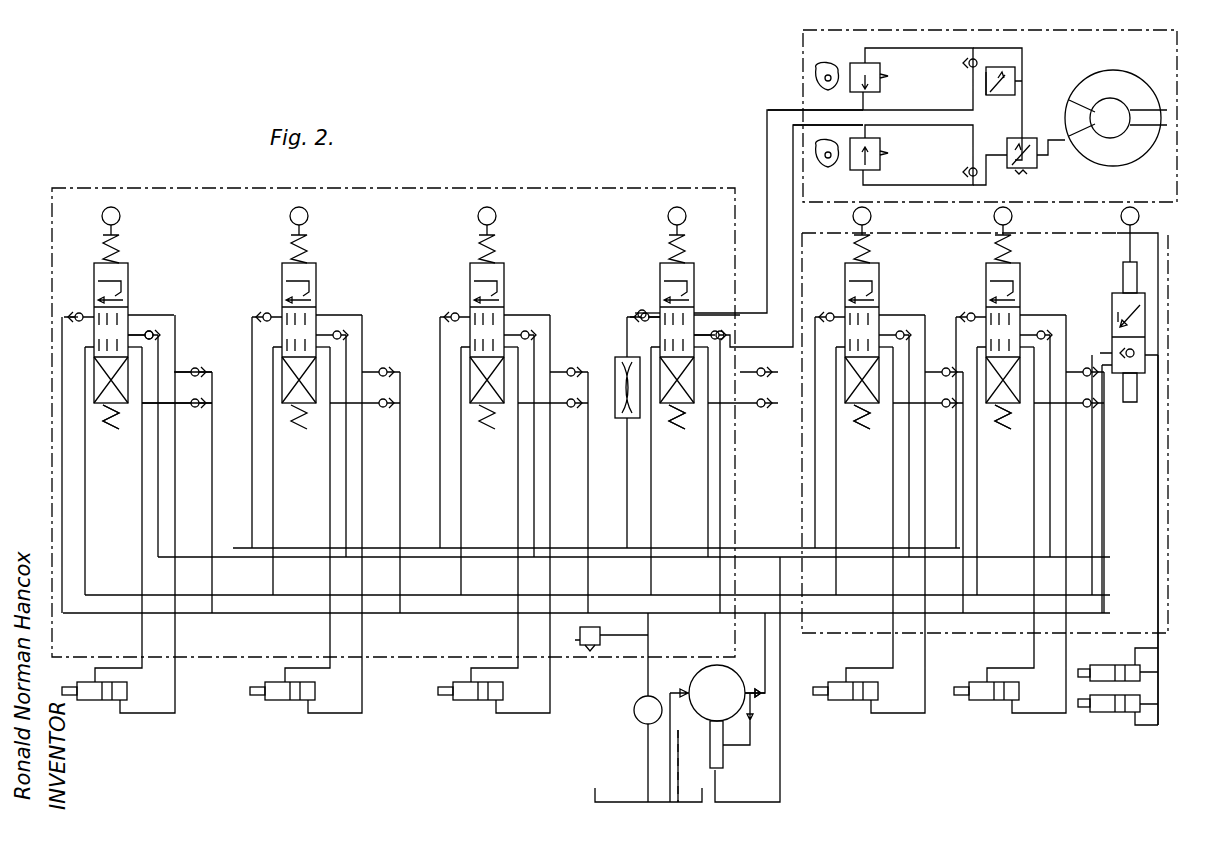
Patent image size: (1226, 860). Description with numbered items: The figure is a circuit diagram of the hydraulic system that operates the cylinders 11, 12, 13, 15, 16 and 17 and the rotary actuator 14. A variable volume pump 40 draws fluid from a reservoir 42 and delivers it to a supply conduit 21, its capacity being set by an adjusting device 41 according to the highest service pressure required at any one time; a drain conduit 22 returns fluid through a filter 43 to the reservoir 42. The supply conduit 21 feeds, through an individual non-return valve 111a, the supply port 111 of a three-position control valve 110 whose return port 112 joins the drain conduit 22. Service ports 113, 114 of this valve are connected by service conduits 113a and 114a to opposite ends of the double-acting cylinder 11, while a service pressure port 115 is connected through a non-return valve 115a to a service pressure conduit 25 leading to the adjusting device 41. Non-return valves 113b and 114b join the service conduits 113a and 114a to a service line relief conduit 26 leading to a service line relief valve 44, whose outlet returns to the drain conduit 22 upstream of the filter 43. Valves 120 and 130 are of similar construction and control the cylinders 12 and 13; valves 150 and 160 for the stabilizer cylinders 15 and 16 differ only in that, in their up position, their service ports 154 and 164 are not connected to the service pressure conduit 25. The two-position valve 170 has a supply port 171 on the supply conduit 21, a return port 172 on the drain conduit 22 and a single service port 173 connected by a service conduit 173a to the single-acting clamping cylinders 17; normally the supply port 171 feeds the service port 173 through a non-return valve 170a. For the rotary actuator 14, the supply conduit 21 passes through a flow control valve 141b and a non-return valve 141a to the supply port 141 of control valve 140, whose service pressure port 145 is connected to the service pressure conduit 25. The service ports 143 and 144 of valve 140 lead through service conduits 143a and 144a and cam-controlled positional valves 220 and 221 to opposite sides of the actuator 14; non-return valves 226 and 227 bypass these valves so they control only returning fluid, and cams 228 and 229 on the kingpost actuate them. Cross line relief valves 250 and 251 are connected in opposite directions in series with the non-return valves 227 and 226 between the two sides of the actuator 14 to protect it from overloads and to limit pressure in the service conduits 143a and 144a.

The double-acting cylinder 11 is at (92, 702).
The cylinder 12 is at (282, 702).
The cylinder 13 is at (472, 702).
The rotary actuator 14 is at (941, 134).
The cylinder 15 is at (840, 702).
The cylinder 16 is at (988, 702).
The single-acting cylinders 17 is at (1110, 665).
The supply conduit 21 is at (678, 615).
The drain conduit 22 is at (688, 610).
The service pressure conduit 25 is at (700, 557).
The service line relief conduit 26 is at (378, 548).
The variable volume pump 40 is at (726, 705).
The adjusting device 41 is at (720, 748).
The reservoir 42 is at (612, 798).
The filter 43 is at (634, 712).
The service line relief valve 44 is at (578, 648).
The three-position control valve 110 is at (123, 460).
The supply port 111 is at (85, 313).
The non-return valve 111a is at (74, 316).
The return port 112 is at (90, 349).
The service port 113 is at (128, 325).
The service conduit 113a is at (177, 510).
The non-return valve 113b is at (210, 370).
The service port 114 is at (128, 413).
The service conduit 114a is at (118, 514).
The non-return valve 114b is at (212, 408).
The service pressure port 115 is at (158, 333).
The non-return valve 115a is at (155, 334).
The three-position control valve 120 is at (316, 300).
The three-position control valve 130 is at (504, 300).
The three-position control valve 140 is at (709, 361).
The supply port 141 is at (655, 310).
The non-return valve 141a is at (630, 316).
The flow control valve 141b is at (615, 375).
The service port 143 is at (696, 318).
The service conduit 143a is at (768, 200).
The service port 144 is at (688, 405).
The service conduit 144a is at (694, 292).
The service pressure port 145 is at (700, 330).
The control valve 150 is at (889, 460).
The service port 154 is at (880, 408).
The control valve 160 is at (1030, 460).
The service port 164 is at (1020, 408).
The two-position control valve 170 is at (1143, 466).
The non-return valve 170a is at (1140, 362).
The supply port 171 is at (1110, 355).
The return port 172 is at (1105, 370).
The service port 173 is at (1138, 353).
The service conduit 173a is at (1160, 505).
The cam-controlled positional valve 220 is at (862, 75).
The cam-controlled positional valve 221 is at (872, 172).
The non-return valve 226 is at (969, 64).
The non-return valve 227 is at (968, 172).
The cam 228 is at (814, 82).
The cam 229 is at (814, 155).
The cross line relief valve 250 is at (1035, 152).
The cross line relief valve 251 is at (1015, 95).